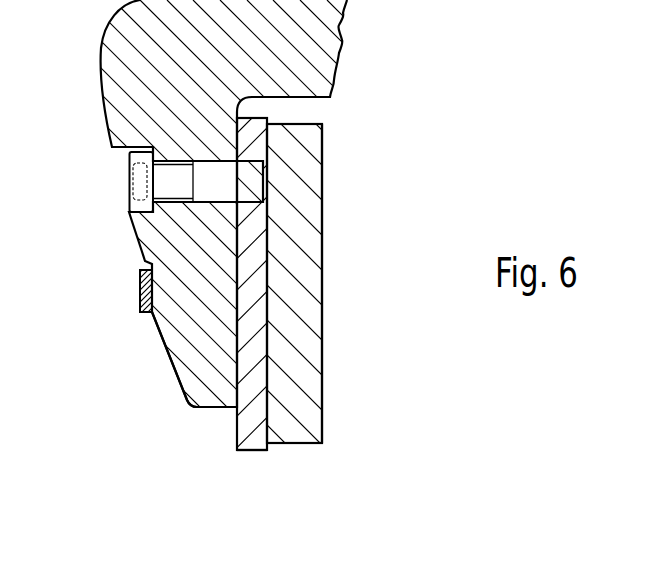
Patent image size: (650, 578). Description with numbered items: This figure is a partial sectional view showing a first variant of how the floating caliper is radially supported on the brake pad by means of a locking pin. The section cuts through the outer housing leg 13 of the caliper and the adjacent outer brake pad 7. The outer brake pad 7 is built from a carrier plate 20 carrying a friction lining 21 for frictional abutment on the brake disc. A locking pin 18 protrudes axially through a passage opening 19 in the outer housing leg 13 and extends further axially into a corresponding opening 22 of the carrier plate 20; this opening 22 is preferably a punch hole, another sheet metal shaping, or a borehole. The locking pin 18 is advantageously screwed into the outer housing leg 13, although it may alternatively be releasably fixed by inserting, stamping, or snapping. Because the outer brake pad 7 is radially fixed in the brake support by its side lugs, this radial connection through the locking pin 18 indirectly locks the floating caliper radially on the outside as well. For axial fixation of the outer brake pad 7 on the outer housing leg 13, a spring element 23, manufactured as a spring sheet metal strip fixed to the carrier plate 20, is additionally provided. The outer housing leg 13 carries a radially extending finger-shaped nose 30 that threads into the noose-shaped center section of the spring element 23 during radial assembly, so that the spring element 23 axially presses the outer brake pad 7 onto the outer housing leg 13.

The outer housing leg 13 is at (143, 77).
The locking pin 18 is at (122, 199).
The passage opening 19 is at (113, 149).
The carrier plate 20 is at (250, 422).
The friction lining 21 is at (322, 261).
The opening 22 is at (322, 164).
The spring element 23 is at (140, 292).
The finger-shaped nose 30 is at (195, 328).
The outer brake pad 7 is at (279, 462).